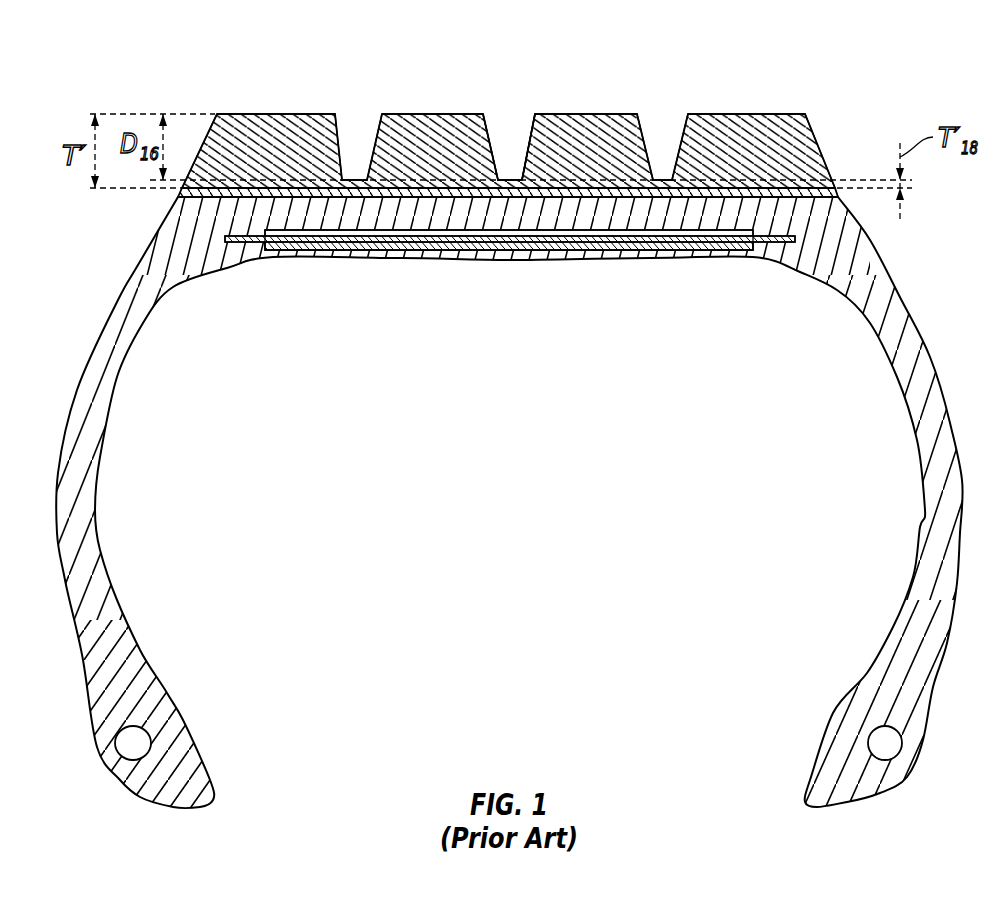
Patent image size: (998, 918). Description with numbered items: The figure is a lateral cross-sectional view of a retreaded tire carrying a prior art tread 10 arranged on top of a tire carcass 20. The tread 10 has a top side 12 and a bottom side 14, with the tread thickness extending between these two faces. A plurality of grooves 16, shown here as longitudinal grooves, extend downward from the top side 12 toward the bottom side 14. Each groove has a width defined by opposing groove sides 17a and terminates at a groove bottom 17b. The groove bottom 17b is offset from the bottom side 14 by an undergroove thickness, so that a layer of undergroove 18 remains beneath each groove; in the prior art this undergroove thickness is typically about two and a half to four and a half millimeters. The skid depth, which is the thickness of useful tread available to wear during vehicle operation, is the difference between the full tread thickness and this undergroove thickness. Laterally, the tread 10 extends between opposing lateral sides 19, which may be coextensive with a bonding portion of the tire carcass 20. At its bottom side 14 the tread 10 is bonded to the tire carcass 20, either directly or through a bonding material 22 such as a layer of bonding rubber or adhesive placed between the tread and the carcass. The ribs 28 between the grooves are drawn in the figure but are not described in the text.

The prior art tread 10 is at (757, 132).
The top side 12 is at (725, 112).
The bottom side 14 is at (747, 200).
The grooves 16 is at (512, 114).
The groove sides 17a is at (490, 113).
The groove bottom 17b is at (503, 170).
The undergroove 18 is at (363, 178).
The lateral sides 19 is at (195, 113).
The tire carcass 20 is at (170, 693).
The bonding material 22 is at (450, 193).
The tread ribs 28 is at (587, 112).